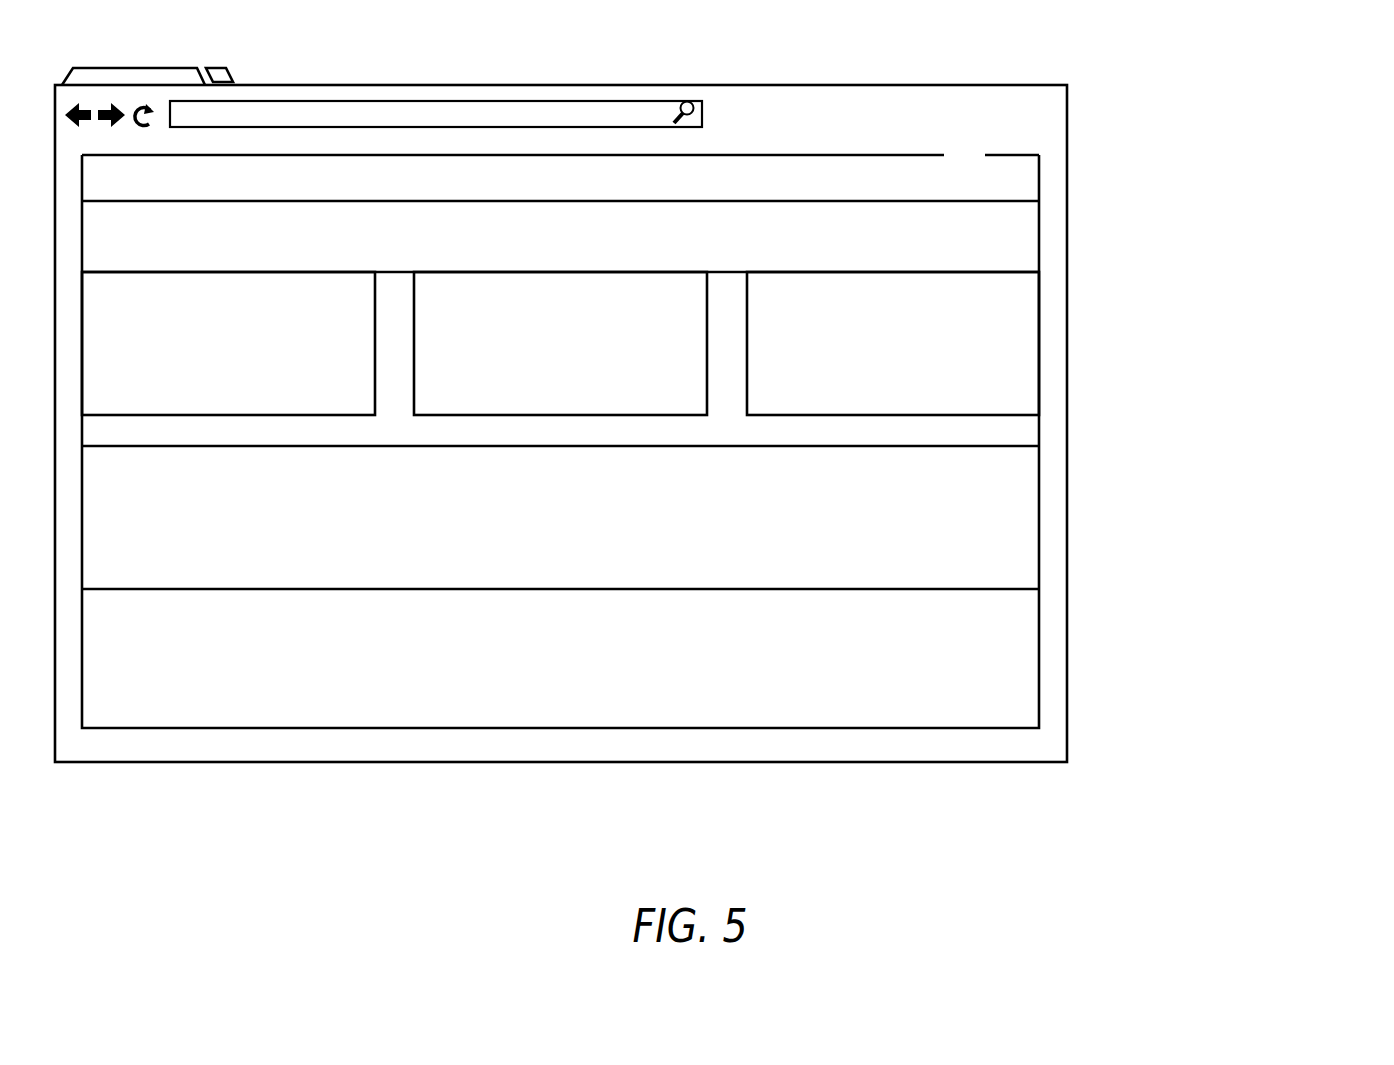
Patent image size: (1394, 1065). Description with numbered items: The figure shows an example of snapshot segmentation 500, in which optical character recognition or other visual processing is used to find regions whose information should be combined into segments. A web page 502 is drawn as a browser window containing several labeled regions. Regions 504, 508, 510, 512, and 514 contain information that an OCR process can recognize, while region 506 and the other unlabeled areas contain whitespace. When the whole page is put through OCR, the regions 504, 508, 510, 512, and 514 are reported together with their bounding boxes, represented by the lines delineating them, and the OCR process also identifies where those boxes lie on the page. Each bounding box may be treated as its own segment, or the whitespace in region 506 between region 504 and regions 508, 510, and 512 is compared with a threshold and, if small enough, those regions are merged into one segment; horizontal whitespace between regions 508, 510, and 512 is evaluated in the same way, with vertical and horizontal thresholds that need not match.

The snapshot segmentation 500 is at (702, 391).
The web page 502 is at (561, 391).
The region 504 is at (560, 412).
The region 506 is at (560, 188).
The region 508 is at (228, 343).
The region 510 is at (560, 343).
The region 512 is at (893, 343).
The region 514 is at (560, 517).